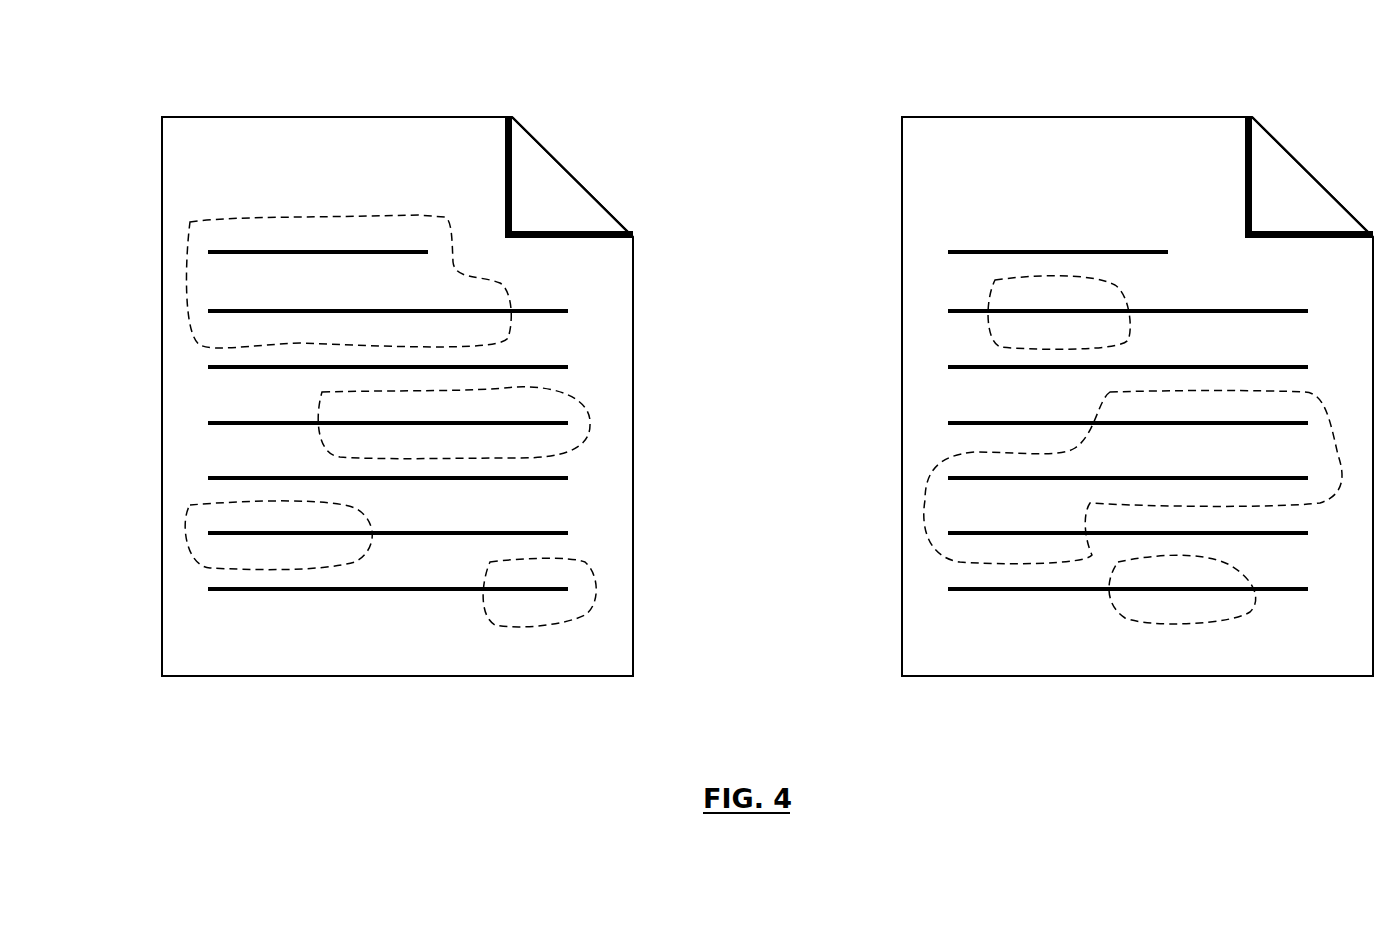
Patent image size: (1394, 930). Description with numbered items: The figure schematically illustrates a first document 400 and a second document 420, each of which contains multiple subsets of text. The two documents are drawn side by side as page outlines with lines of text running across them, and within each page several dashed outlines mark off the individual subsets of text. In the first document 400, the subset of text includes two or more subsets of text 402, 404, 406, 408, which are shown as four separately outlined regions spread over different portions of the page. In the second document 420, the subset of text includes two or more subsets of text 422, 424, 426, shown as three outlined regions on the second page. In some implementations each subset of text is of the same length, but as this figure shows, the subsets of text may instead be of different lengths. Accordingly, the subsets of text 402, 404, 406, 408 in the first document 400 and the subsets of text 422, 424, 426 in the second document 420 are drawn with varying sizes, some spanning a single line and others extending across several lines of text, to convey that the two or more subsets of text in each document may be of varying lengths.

The first document 400 is at (417, 49).
The subset of text 402 is at (418, 215).
The subset of text 404 is at (513, 390).
The subset of text 406 is at (378, 527).
The subset of text 408 is at (580, 560).
The second document 420 is at (1158, 49).
The subset of text 422 is at (1020, 277).
The subset of text 424 is at (997, 453).
The subset of text 426 is at (1110, 598).